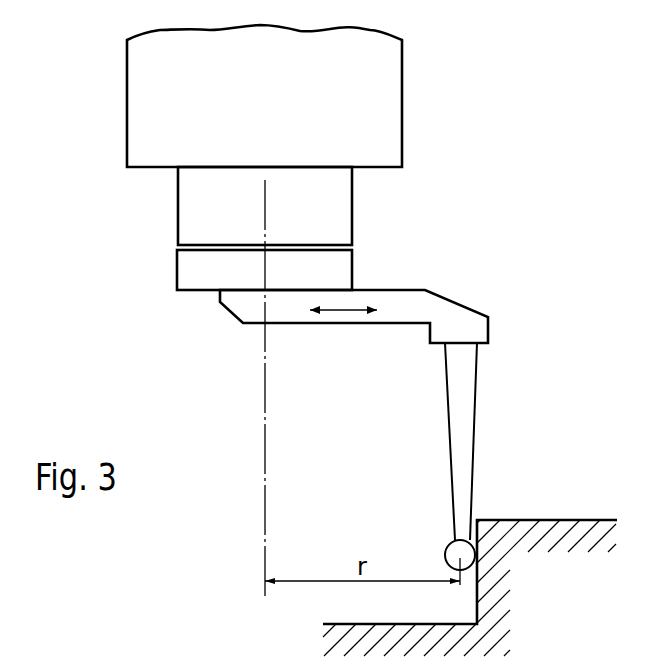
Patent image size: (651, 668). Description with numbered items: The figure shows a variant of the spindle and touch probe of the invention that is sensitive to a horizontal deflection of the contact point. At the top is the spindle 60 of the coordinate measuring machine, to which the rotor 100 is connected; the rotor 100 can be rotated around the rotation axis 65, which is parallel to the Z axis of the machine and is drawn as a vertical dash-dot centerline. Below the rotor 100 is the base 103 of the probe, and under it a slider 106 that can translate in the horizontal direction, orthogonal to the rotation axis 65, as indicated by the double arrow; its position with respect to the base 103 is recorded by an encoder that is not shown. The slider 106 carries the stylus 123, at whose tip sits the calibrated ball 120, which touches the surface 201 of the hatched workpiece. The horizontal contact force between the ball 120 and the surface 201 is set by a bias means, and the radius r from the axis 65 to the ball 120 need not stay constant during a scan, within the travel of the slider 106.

The spindle 60 is at (142, 120).
The rotor 100 is at (197, 217).
The base 103 is at (203, 272).
The slider 106 is at (403, 300).
The stylus 123 is at (460, 410).
The calibrated ball 120 is at (450, 548).
The rotation axis 65 is at (265, 440).
The surface 201 is at (540, 532).